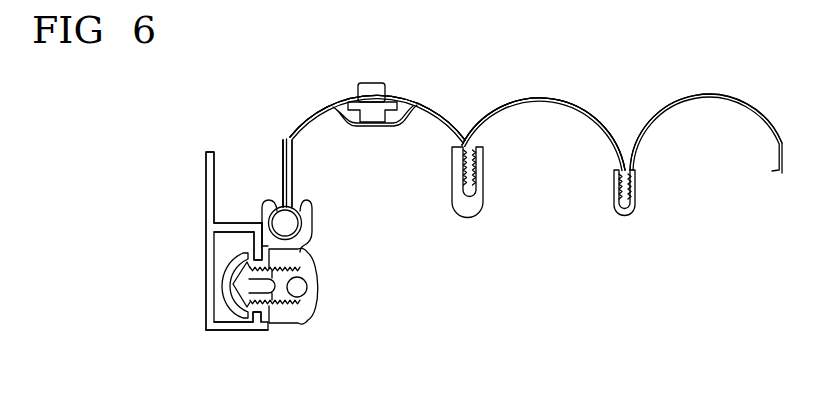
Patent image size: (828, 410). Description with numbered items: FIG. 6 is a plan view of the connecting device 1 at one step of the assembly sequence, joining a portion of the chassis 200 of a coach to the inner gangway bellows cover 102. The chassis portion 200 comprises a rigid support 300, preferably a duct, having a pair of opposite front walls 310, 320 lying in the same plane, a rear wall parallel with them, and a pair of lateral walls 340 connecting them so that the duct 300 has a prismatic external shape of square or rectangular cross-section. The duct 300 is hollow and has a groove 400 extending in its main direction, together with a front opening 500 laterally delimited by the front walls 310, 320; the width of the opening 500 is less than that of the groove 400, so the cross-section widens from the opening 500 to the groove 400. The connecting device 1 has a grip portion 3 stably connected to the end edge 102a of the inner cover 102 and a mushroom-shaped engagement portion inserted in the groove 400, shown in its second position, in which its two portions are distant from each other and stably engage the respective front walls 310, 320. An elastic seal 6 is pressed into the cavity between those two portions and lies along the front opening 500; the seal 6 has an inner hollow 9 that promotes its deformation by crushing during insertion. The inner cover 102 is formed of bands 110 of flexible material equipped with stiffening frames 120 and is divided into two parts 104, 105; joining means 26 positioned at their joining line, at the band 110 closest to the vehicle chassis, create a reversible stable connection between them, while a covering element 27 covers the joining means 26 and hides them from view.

The connecting device 1 is at (337, 225).
The grip portion 3 is at (301, 186).
The elastic seal 6 is at (323, 288).
The inner hollow 9 is at (301, 291).
The joining means 26 is at (385, 76).
The covering element 27 is at (398, 125).
The inner gangway bellows cover 102 is at (672, 92).
The end edge 102a is at (298, 158).
The first part of inner gangway bellows cover 104 is at (332, 110).
The second part of inner gangway bellows cover 105 is at (473, 142).
The band 110 is at (420, 106).
The stiffening frame 120 is at (477, 204).
The portion of the chassis 200 is at (210, 150).
The rigid support 300 is at (199, 210).
The front wall 310 is at (258, 222).
The front wall 320 is at (258, 331).
The lateral wall 340 is at (236, 225).
The groove 400 is at (220, 307).
The front opening 500 is at (248, 285).